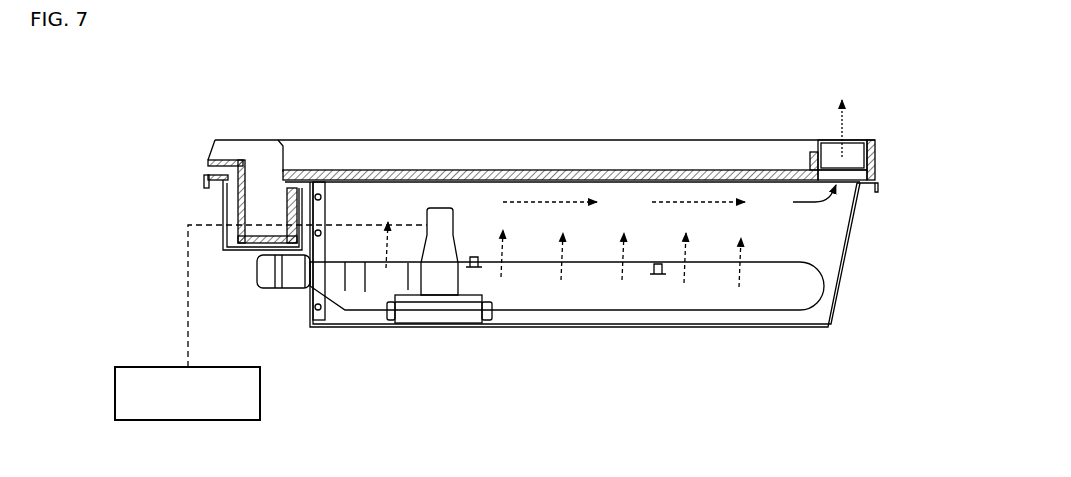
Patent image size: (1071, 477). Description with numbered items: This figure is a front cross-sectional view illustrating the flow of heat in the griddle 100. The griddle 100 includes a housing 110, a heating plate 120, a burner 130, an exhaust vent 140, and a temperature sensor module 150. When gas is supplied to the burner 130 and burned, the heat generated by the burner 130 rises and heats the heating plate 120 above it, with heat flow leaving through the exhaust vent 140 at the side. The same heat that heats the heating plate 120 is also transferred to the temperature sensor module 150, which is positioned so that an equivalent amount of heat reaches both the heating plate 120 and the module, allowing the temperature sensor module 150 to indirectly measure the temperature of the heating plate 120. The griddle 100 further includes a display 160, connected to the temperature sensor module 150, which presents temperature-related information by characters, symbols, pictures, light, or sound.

The griddle 100 is at (891, 93).
The housing 110 is at (858, 263).
The heating plate 120 is at (562, 158).
The burner 130 is at (576, 312).
The exhaust vent 140 is at (824, 142).
The temperature sensor module 150 is at (441, 198).
The display 160 is at (270, 393).